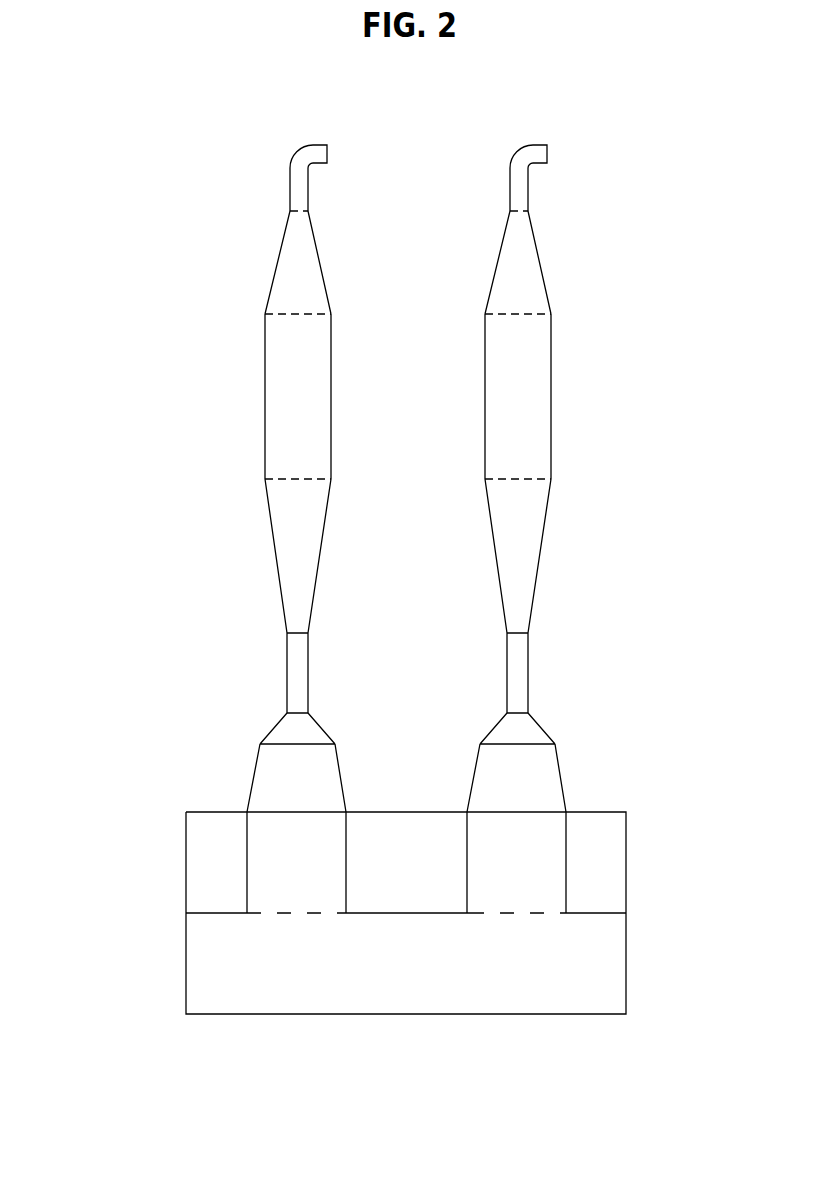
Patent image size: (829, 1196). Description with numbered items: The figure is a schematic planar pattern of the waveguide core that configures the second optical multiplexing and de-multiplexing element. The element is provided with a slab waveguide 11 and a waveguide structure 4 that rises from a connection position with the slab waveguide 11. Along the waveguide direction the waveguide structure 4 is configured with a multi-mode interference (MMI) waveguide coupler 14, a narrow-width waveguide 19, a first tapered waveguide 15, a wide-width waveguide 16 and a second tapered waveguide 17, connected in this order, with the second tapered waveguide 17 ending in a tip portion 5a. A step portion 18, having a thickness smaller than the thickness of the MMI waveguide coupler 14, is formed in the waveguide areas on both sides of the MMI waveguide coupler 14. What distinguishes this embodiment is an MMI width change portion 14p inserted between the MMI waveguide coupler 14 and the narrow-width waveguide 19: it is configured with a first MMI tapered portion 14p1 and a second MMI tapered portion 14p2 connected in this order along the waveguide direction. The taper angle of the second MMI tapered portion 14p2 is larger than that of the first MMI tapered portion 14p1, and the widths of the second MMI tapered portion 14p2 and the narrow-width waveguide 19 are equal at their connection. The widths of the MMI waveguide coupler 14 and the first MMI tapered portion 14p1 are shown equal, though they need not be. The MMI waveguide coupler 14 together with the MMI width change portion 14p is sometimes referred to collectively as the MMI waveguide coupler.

The waveguide structure 4 is at (652, 212).
The tip portion 5a is at (300, 187).
The second tapered waveguide 17 is at (307, 267).
The wide-width waveguide 16 is at (293, 457).
The first tapered waveguide 15 is at (305, 565).
The narrow-width waveguide 19 is at (300, 677).
The MMI width change portion 14p is at (209, 762).
The second MMI tapered portion 14p2 is at (280, 730).
The first MMI tapered portion 14p1 is at (280, 783).
The multi-mode interference (MMI) waveguide coupler 14 is at (258, 837).
The step portion 18 is at (213, 888).
The slab waveguide 11 is at (213, 970).